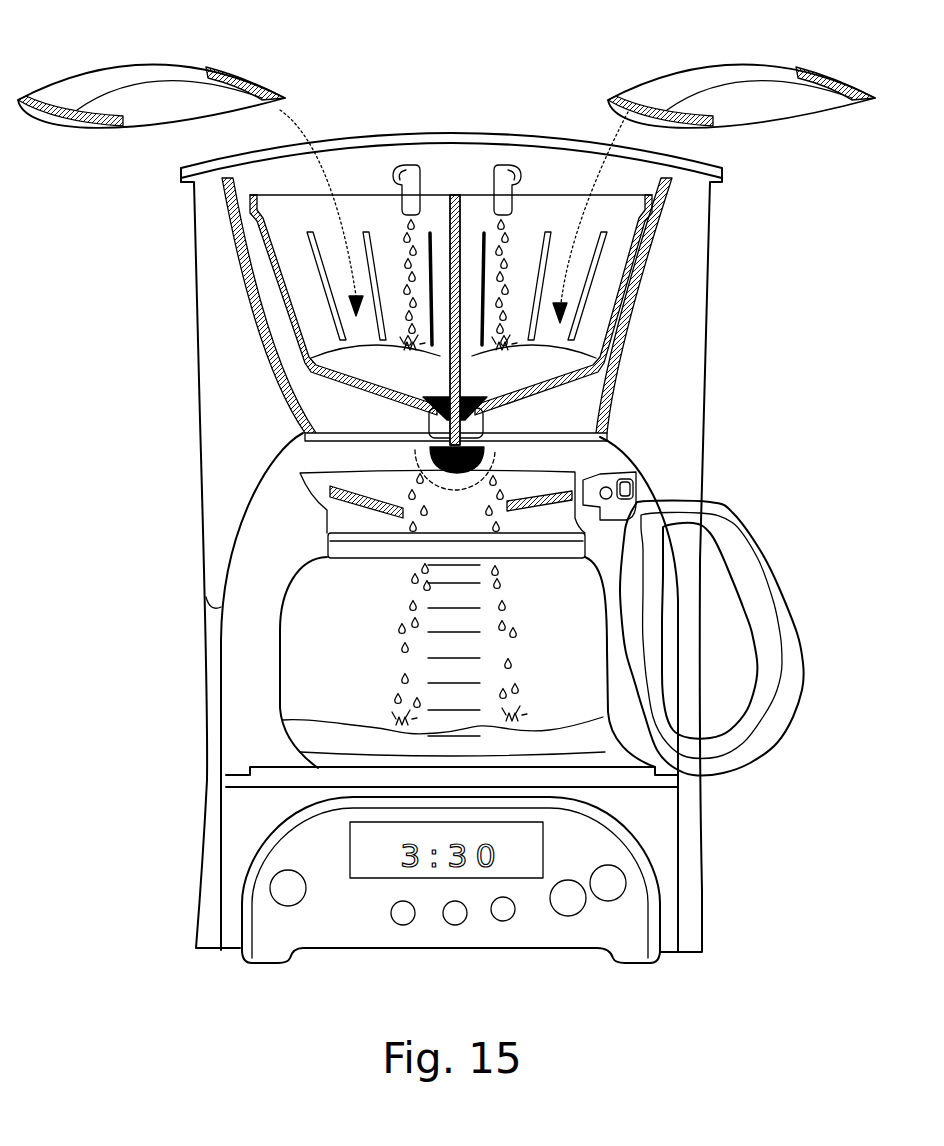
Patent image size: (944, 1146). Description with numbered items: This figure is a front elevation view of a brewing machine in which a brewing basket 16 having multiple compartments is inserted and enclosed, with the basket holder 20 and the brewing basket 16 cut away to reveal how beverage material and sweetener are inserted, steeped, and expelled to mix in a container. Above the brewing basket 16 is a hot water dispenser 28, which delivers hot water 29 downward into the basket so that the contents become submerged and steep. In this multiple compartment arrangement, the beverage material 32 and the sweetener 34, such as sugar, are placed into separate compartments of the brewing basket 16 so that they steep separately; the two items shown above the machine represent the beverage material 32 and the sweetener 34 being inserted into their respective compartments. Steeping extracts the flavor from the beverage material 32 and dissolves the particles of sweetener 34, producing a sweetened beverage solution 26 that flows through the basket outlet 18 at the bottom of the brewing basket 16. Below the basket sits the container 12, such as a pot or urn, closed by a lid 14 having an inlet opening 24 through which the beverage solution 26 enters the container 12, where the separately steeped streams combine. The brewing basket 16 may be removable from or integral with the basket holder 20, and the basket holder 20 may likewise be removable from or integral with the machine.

The container 12 is at (300, 650).
The lid 14 is at (605, 478).
The brewing basket 16 is at (657, 215).
The basket outlet 18 is at (600, 446).
The basket holder 20 is at (663, 273).
The inlet opening 24 is at (410, 468).
The beverage solution 26 is at (300, 738).
The hot water dispenser 28 is at (500, 170).
The hot water 29 is at (405, 252).
The beverage material 32 is at (715, 66).
The sweetener 34 is at (148, 66).